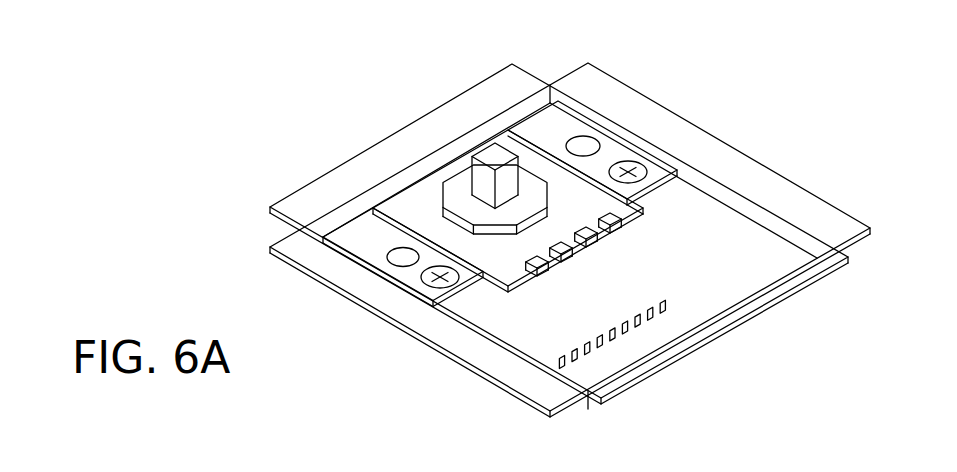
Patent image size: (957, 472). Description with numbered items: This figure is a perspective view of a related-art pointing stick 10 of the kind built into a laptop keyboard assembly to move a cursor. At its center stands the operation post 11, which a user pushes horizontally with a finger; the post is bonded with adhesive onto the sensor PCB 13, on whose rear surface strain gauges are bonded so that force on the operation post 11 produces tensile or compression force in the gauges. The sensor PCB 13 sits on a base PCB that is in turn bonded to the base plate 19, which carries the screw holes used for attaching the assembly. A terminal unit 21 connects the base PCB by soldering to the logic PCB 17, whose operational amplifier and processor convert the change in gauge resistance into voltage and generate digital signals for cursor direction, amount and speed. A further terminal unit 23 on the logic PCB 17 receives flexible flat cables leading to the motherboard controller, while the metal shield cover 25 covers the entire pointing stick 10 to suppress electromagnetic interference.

The pointing stick 10 is at (842, 133).
The operation post 11 is at (493, 150).
The sensor printed circuit board (PCB) 13 is at (533, 187).
The logic PCB 17 is at (698, 251).
The base plate 19 is at (610, 155).
The terminal unit 21 is at (619, 254).
The terminal unit 23 is at (590, 327).
The metal shield cover 25 is at (695, 147).